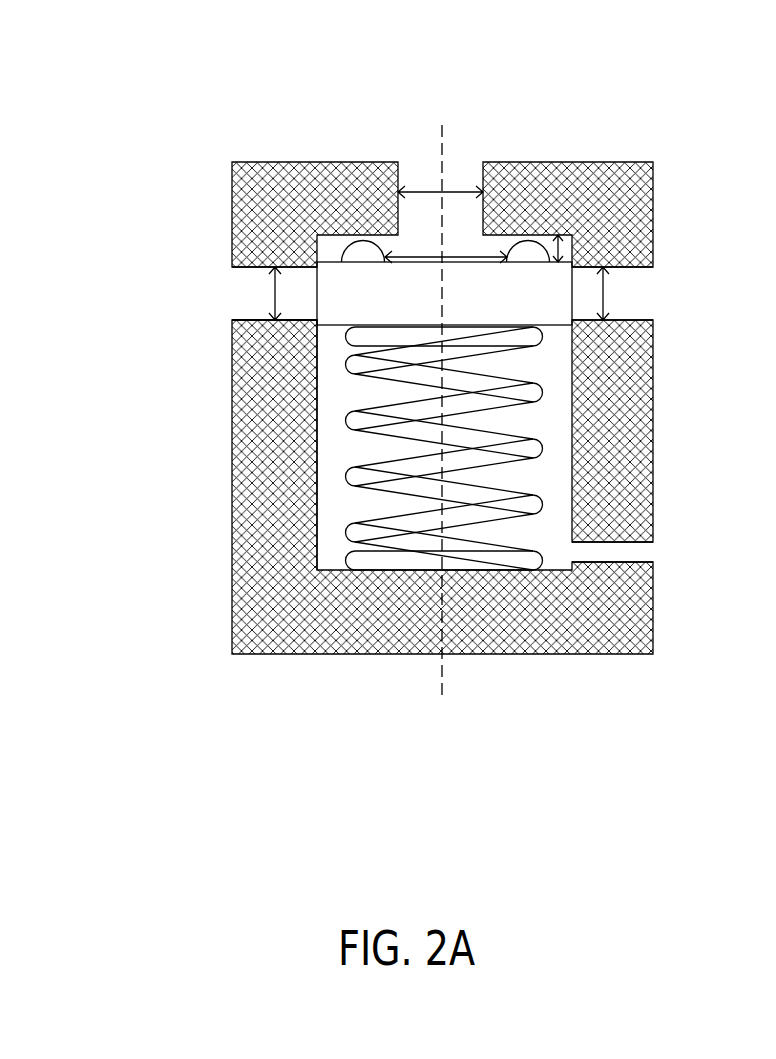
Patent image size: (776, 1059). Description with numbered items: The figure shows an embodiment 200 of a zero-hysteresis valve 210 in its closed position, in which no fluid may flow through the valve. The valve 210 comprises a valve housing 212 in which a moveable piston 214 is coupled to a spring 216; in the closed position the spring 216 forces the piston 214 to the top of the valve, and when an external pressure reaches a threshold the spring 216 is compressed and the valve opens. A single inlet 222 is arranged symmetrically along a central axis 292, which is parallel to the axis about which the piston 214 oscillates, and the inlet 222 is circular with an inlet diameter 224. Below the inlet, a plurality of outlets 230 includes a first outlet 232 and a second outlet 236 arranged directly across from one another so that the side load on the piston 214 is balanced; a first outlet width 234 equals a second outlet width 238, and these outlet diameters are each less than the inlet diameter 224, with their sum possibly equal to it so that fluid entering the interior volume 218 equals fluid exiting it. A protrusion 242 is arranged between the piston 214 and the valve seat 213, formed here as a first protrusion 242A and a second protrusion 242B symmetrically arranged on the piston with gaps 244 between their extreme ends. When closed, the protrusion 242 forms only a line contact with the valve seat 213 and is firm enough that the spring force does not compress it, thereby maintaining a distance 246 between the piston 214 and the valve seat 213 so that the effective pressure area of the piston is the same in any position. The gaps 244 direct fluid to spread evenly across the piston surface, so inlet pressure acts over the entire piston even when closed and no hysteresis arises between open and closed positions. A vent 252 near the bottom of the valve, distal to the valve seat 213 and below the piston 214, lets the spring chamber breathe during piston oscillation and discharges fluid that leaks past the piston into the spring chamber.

The embodiment 200 is at (675, 83).
The valve 210 is at (232, 654).
The valve housing 212 is at (247, 530).
The valve seat 213 is at (330, 233).
The piston 214 is at (489, 320).
The spring 216 is at (545, 557).
The interior volume 218 is at (330, 443).
The inlet 222 is at (457, 157).
The inlet diameter 224 is at (398, 191).
The plurality of outlets 230 is at (206, 323).
The first outlet 232 is at (232, 302).
The first outlet width 234 is at (272, 287).
The second outlet 236 is at (653, 290).
The second outlet width 238 is at (607, 288).
The protrusion 242 is at (359, 233).
The first protrusion 242A is at (372, 263).
The second protrusion 242B is at (523, 266).
The gaps 244 is at (387, 256).
The distance 246 is at (562, 250).
The vent 252 is at (652, 552).
The central axis 292 is at (443, 686).